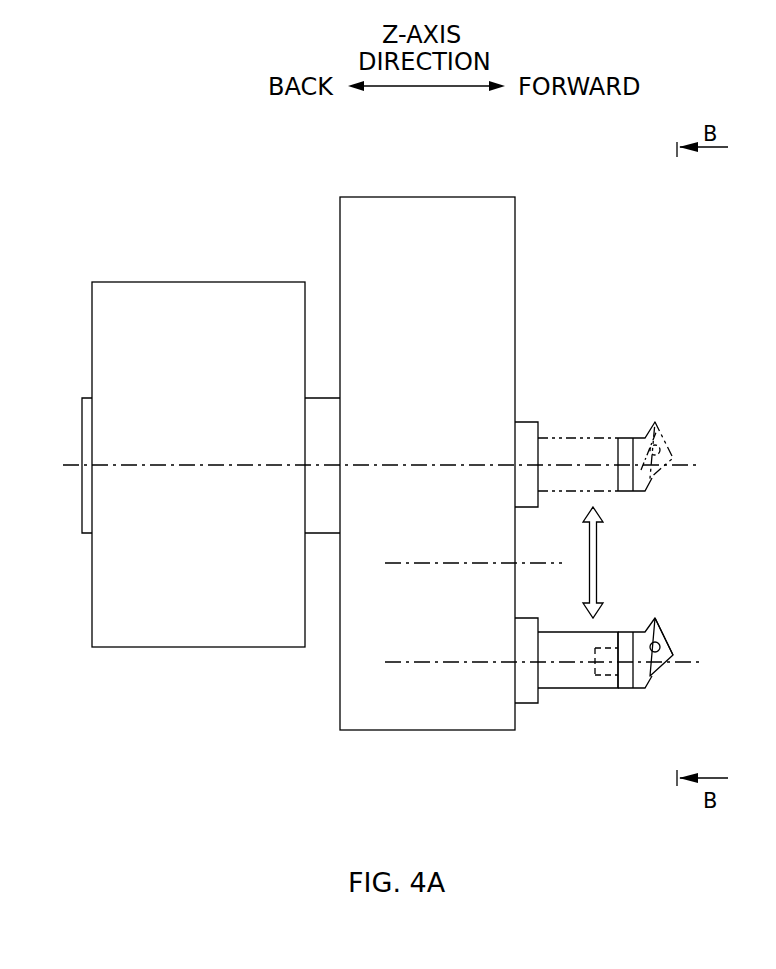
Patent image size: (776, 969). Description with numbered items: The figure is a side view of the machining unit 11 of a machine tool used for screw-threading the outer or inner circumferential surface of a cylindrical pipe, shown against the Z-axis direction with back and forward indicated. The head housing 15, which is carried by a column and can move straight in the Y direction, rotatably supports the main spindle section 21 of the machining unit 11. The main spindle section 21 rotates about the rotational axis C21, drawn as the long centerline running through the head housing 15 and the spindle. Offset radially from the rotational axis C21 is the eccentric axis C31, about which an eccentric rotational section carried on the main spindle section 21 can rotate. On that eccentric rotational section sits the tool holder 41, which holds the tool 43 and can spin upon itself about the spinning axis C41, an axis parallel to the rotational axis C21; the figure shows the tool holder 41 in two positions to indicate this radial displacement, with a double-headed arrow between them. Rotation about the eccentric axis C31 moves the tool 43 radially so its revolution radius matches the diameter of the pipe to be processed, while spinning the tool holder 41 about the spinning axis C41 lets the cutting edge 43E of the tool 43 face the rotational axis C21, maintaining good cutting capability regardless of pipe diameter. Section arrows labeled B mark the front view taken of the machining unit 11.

The machining unit 11 is at (236, 191).
The head housing 15 is at (182, 296).
The main spindle section 21 is at (418, 211).
The tool holder 41 is at (575, 442).
The tool 43 is at (652, 478).
The cutting edge 43E is at (655, 621).
The rotational axis C21 is at (428, 455).
The eccentric axis C31 is at (428, 552).
The spinning axis C41 is at (428, 675).